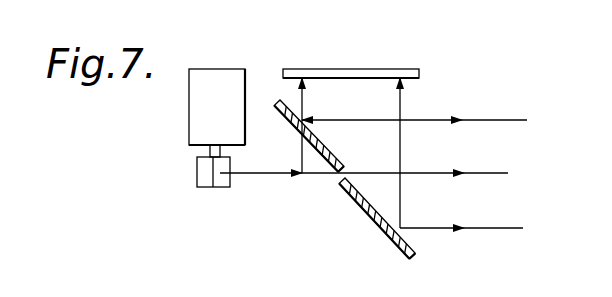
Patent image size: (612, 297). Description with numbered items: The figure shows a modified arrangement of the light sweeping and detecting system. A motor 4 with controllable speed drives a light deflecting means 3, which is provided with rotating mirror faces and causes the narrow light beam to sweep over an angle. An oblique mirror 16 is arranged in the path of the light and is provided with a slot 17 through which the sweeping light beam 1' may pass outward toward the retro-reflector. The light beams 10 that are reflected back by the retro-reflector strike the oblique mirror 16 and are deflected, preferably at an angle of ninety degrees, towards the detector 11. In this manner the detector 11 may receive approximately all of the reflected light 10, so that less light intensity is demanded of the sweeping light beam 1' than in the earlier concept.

The motor 4 is at (218, 75).
The light deflecting means 3 is at (203, 182).
The detector 11 is at (380, 75).
The reflected light beams 10 is at (500, 118).
The sweeping light beam 1' is at (412, 156).
The slot 17 is at (343, 177).
The oblique mirror 16 is at (380, 217).